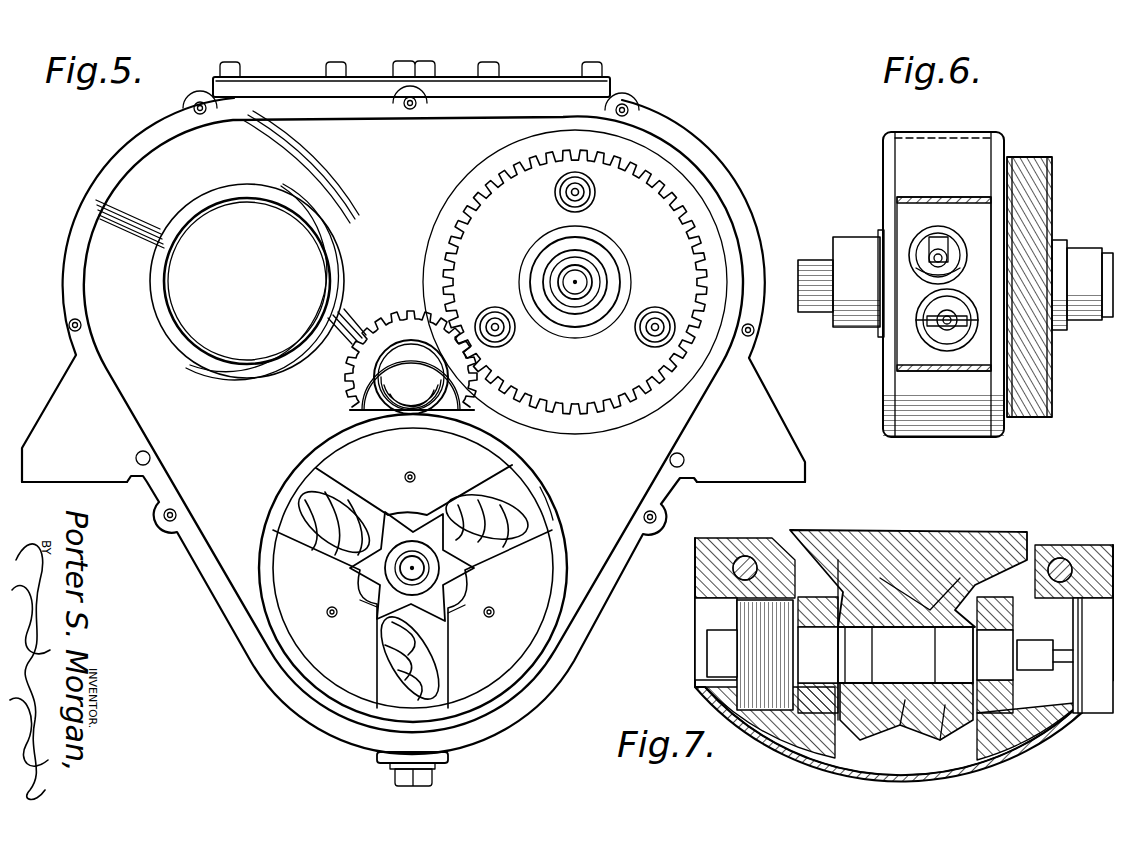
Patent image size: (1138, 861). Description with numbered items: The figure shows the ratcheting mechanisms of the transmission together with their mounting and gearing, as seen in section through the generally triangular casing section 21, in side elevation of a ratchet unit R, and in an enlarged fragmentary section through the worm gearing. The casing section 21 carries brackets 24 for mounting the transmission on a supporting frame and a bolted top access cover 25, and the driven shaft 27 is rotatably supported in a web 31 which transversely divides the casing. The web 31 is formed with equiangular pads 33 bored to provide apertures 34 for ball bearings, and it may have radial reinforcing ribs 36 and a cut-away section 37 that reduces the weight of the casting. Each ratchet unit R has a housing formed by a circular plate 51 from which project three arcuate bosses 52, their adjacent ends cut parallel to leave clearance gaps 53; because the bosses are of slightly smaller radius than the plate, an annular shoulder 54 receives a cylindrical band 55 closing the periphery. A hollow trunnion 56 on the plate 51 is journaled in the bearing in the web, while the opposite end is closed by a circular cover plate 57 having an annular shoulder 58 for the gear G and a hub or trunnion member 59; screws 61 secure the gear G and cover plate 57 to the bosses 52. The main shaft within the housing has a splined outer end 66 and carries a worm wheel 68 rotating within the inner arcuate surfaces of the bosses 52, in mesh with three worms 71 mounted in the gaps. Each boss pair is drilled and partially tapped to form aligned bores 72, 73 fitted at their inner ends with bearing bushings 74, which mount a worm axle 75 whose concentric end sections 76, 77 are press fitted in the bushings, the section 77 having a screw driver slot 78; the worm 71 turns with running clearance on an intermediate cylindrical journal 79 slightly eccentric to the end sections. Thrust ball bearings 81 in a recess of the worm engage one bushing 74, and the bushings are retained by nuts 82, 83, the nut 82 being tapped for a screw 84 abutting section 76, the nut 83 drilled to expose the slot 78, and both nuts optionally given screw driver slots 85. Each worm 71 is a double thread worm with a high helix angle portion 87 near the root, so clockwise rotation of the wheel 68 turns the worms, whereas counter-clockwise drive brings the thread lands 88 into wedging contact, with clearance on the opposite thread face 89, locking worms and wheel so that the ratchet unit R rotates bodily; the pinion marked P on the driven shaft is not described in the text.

In FIG. 5, the generally triangular casing section 21 is at (74, 191).
In FIG. 5, the brackets 24 is at (413, 465).
In FIG. 5, the top access cover 25 is at (284, 82).
In FIG. 5, the driven shaft 27 is at (411, 377).
In FIG. 5, the web 31 is at (388, 247).
In FIG. 5, the pads 33 is at (313, 226).
In FIG. 5, the apertures 34 is at (284, 216).
In FIG. 5, the radial reinforcing ribs 36 is at (162, 226).
In FIG. 5, the cut-away section 37 is at (268, 153).
In FIG. 5, the circular plate 51 is at (308, 446).
In FIG. 6, the circular plate 51 is at (902, 140).
In FIG. 7, the circular plate 51 is at (856, 722).
In FIG. 5, the arcuate bosses 52 is at (412, 570).
In FIG. 6, the arcuate bosses 52 is at (907, 318).
In FIG. 7, the arcuate bosses 52 is at (811, 740).
In FIG. 5, the clearance gaps 53 is at (302, 477).
In FIG. 7, the clearance gaps 53 is at (866, 750).
In FIG. 6, the annular shoulder 54 is at (890, 156).
In FIG. 6, the cylindrical band 55 is at (917, 178).
In FIG. 7, the cylindrical band 55 is at (878, 770).
In FIG. 6, the hollow trunnion 56 is at (855, 240).
In FIG. 5, the circular cover plate 57 is at (488, 170).
In FIG. 6, the circular cover plate 57 is at (997, 163).
In FIG. 6, the annular shoulder 58 is at (1040, 222).
In FIG. 5, the hub or trunnion member 59 is at (553, 277).
In FIG. 6, the hub or trunnion member 59 is at (1082, 260).
In FIG. 5, the screws 61 is at (594, 198).
In FIG. 7, the screws 61 is at (745, 556).
In FIG. 6, the splined outer end 66 is at (812, 258).
In FIG. 5, the worm wheel 68 is at (412, 566).
In FIG. 7, the worm wheel 68 is at (902, 540).
In FIG. 5, the worms 71 is at (310, 510).
In FIG. 7, the worms 71 is at (890, 722).
In FIG. 6, the bore 72 is at (928, 243).
In FIG. 7, the bore 72 is at (696, 613).
In FIG. 6, the bore 73 is at (935, 332).
In FIG. 7, the bore 73 is at (1095, 655).
In FIG. 7, the bearing bushings 74 is at (817, 624).
In FIG. 7, the worm axle 75 is at (925, 655).
In FIG. 7, the end section 76 is at (820, 655).
In FIG. 7, the end section 77 is at (995, 655).
In FIG. 7, the screw driver slot 78 is at (1013, 656).
In FIG. 7, the intermediate cylindrical journal 79 is at (891, 655).
In FIG. 7, the thrust ball bearings 81 is at (860, 655).
In FIG. 6, the nut 82 is at (953, 245).
In FIG. 7, the nut 82 is at (770, 618).
In FIG. 7, the nut 83 is at (1094, 655).
In FIG. 7, the screw 84 is at (722, 656).
In FIG. 6, the screw driver slots 85 is at (972, 330).
In FIG. 7, the screw driver slots 85 is at (1058, 657).
In FIG. 5, the high helix angle portion 87 is at (418, 632).
In FIG. 7, the high helix angle portion 87 is at (958, 700).
In FIG. 5, the thread lands 88 is at (378, 630).
In FIG. 7, the thread lands 88 is at (912, 725).
In FIG. 7, the opposite thread face 89 is at (948, 725).
In FIG. 5, the gear G is at (450, 266).
In FIG. 6, the gear G is at (1058, 167).
In FIG. 5, the pinion P is at (408, 309).
In FIG. 5, the ratchet unit R is at (552, 484).
In FIG. 6, the ratchet unit R is at (939, 128).